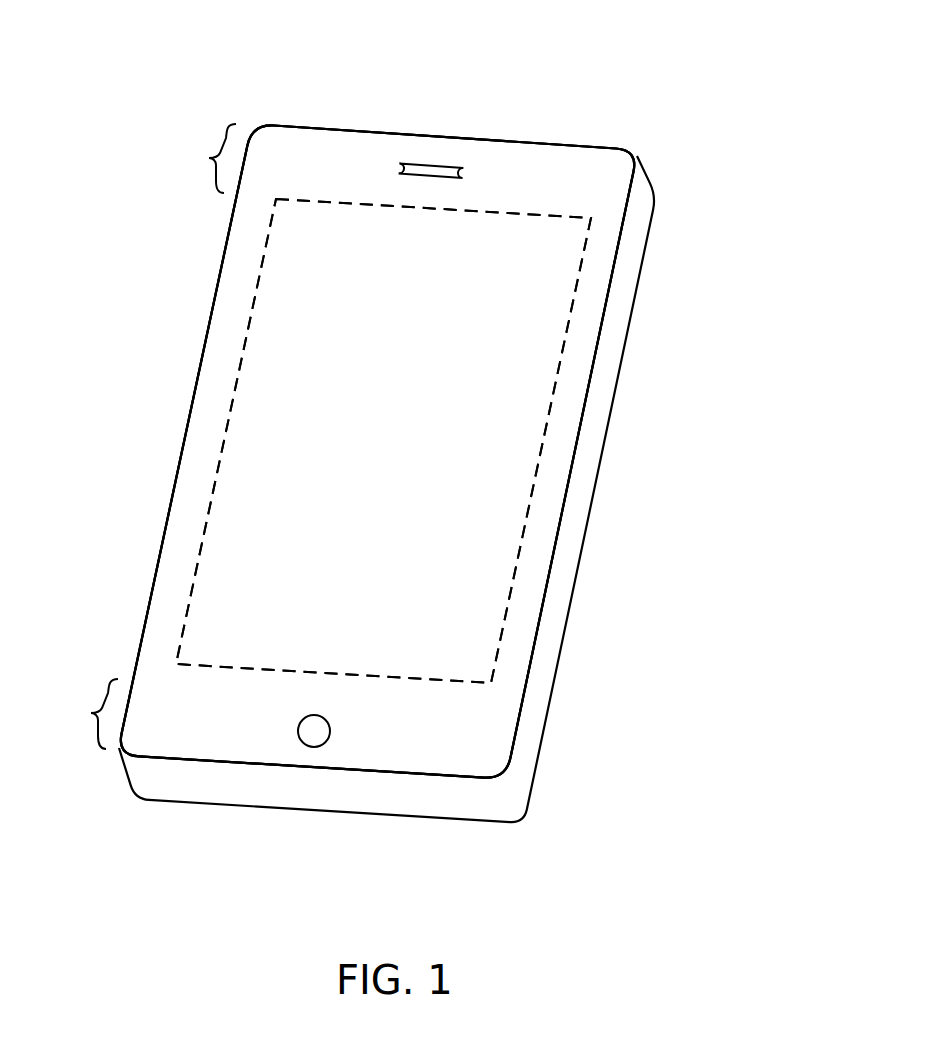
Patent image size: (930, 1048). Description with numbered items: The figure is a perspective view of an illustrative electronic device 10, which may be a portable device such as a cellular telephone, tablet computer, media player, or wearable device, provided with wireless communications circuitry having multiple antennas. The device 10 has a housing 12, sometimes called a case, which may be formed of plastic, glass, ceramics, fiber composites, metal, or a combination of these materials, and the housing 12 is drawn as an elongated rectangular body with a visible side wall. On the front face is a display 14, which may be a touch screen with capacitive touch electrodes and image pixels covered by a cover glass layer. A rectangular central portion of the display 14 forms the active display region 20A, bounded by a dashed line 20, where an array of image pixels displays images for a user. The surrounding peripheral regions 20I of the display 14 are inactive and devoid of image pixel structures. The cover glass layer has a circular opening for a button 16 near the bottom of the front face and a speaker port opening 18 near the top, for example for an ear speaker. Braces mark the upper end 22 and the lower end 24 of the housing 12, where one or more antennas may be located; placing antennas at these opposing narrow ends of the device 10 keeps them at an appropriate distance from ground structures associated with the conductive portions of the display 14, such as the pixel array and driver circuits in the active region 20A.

The electronic device 10 is at (716, 66).
The housing 12 is at (627, 280).
The display 14 is at (527, 433).
The button 16 is at (313, 746).
The speaker port opening 18 is at (427, 165).
The dashed line 20 is at (217, 463).
The active display region 20A is at (230, 552).
The peripheral regions 20I is at (518, 168).
The upper end 22 is at (207, 158).
The lower end 24 is at (88, 714).